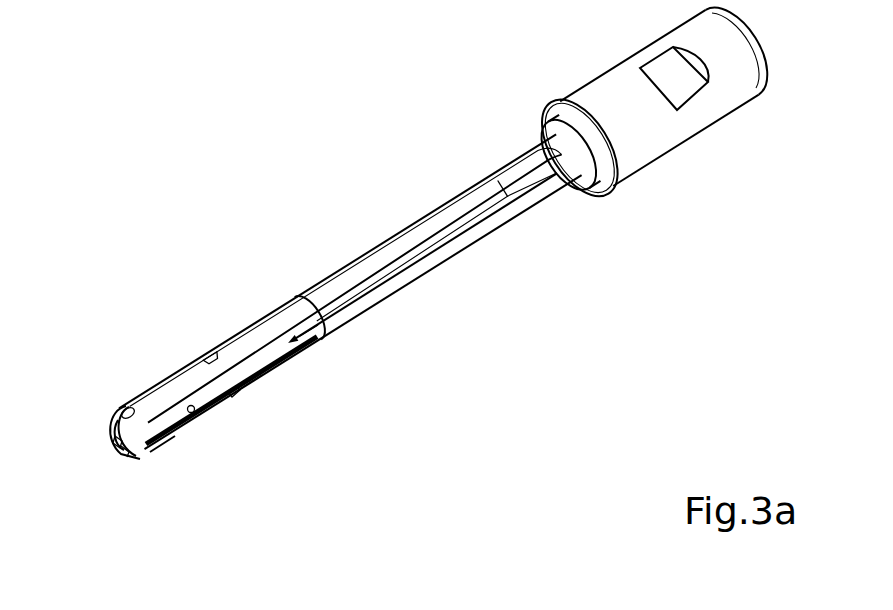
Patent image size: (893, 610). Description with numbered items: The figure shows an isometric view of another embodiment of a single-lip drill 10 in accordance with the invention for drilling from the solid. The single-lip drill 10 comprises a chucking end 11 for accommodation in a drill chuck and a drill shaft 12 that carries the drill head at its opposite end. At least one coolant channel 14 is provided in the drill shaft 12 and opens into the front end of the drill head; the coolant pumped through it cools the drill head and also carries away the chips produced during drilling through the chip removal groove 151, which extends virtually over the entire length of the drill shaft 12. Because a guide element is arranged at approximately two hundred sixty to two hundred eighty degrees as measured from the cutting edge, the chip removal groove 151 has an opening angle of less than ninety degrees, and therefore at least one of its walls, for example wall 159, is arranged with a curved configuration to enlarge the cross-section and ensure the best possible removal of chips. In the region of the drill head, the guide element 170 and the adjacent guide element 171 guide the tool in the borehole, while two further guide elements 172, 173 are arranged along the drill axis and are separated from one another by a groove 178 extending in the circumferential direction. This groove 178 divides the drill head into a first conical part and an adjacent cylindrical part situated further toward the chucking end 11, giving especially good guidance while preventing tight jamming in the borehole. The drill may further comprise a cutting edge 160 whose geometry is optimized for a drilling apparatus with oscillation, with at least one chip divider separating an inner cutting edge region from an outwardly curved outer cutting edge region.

The single-lip drill 10 is at (452, 165).
The chucking end 11 is at (620, 85).
The drill shaft 12 is at (425, 218).
The coolant channel 14 is at (123, 430).
The chip removal groove 151 is at (313, 328).
The wall 159 is at (115, 417).
The cutting edge 160 is at (135, 457).
The guide element 170 is at (282, 310).
The guide element 171 is at (195, 415).
The guide element 172 is at (162, 443).
The guide element 173 is at (250, 383).
The groove 178 is at (212, 353).